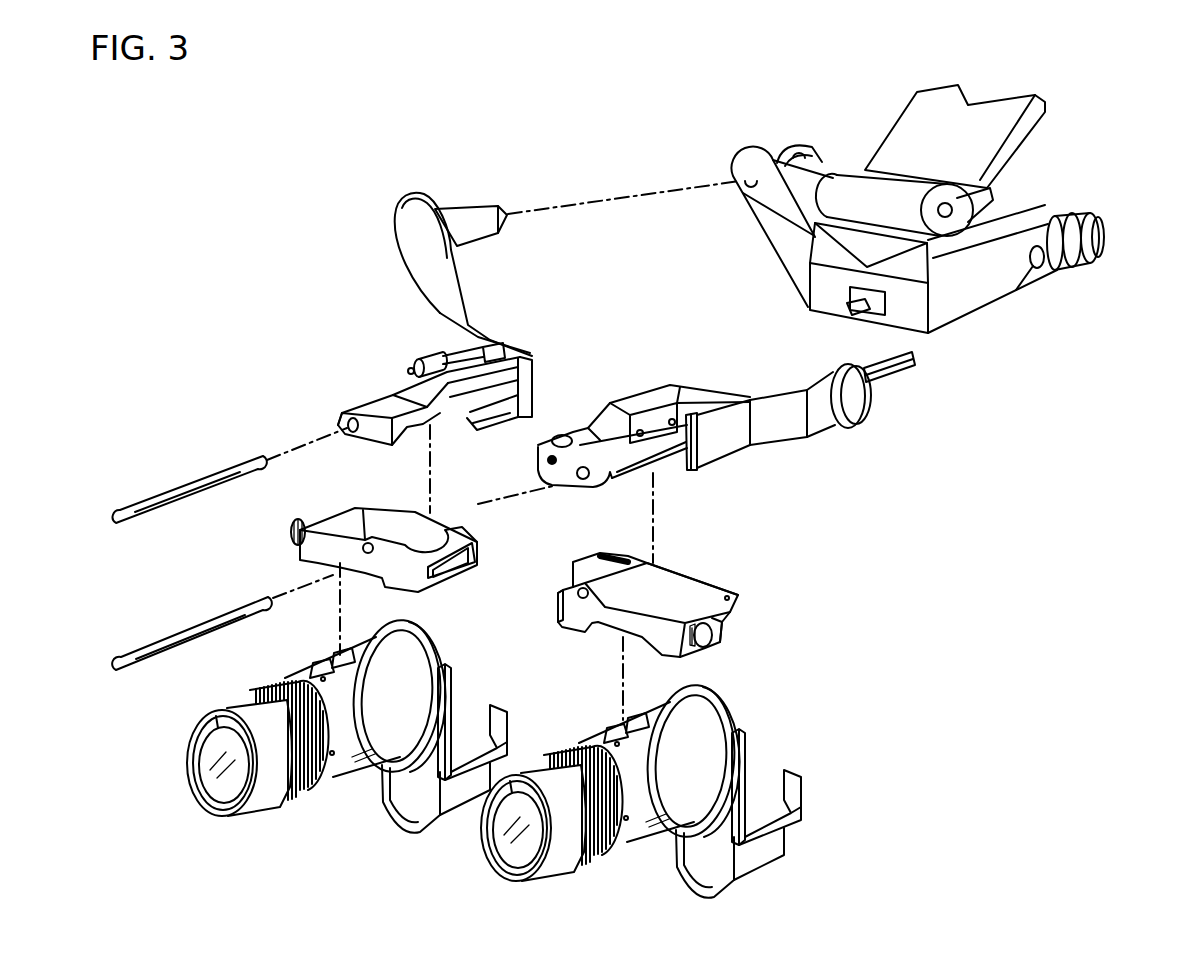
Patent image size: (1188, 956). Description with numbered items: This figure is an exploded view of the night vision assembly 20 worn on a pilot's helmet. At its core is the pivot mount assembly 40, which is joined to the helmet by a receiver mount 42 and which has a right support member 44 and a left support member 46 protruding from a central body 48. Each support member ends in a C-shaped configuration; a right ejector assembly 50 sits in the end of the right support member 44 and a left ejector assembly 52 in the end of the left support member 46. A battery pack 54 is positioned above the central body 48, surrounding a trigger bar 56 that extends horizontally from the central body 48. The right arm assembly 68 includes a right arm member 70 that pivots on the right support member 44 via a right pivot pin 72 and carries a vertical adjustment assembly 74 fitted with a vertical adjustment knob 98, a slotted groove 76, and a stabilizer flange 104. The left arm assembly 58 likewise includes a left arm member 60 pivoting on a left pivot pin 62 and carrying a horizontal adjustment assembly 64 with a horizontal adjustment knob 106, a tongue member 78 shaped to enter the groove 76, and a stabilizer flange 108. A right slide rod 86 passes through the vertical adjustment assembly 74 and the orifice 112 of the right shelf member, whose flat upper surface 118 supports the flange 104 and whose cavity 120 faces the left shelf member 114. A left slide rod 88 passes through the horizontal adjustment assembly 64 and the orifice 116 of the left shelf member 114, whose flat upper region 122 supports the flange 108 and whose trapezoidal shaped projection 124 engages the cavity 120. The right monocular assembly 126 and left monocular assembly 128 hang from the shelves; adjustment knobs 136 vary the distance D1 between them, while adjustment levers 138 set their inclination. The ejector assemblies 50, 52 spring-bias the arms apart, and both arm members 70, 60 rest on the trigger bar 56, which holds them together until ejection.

The night vision assembly 20 is at (632, 98).
The pivot mount assembly 40 is at (1020, 300).
The receiver mount 42 is at (912, 115).
The right support member 44 is at (765, 212).
The left support member 46 is at (1037, 266).
The central body 48 is at (823, 250).
The right ejector assembly 50 is at (742, 183).
The left ejector assembly 52 is at (1075, 240).
The battery pack 54 is at (903, 190).
The trigger bar 56 is at (807, 305).
The left arm assembly 58 is at (783, 466).
The left arm member 60 is at (838, 430).
The left pivot pin 62 is at (905, 368).
The horizontal adjustment assembly 64 is at (670, 468).
The right arm assembly 68 is at (433, 314).
The right arm member 70 is at (473, 303).
The right pivot pin 72 is at (480, 206).
The vertical adjustment assembly 74 is at (380, 400).
The groove 76 is at (445, 425).
The tongue member 78 is at (603, 408).
The right slide rod 86 is at (162, 490).
The left slide rod 88 is at (157, 640).
The vertical adjustment knob 98 is at (445, 360).
The stabilizer flange 104 is at (337, 417).
The horizontal adjustment knob 106 is at (561, 436).
The stabilizer flange 108 is at (603, 487).
The orifice 112 is at (364, 553).
The left shelf member 114 is at (678, 580).
The orifice 116 is at (583, 600).
The flat upper surface 118 is at (370, 523).
The cavity 120 is at (457, 570).
The flat upper region 122 is at (690, 592).
The trapezoidal shaped projection 124 is at (553, 608).
The right monocular assembly 126 is at (224, 704).
The left monocular assembly 128 is at (749, 724).
The adjustment knobs 136 is at (291, 529).
The adjustment levers 138 is at (715, 624).
The distance D1 is at (475, 829).